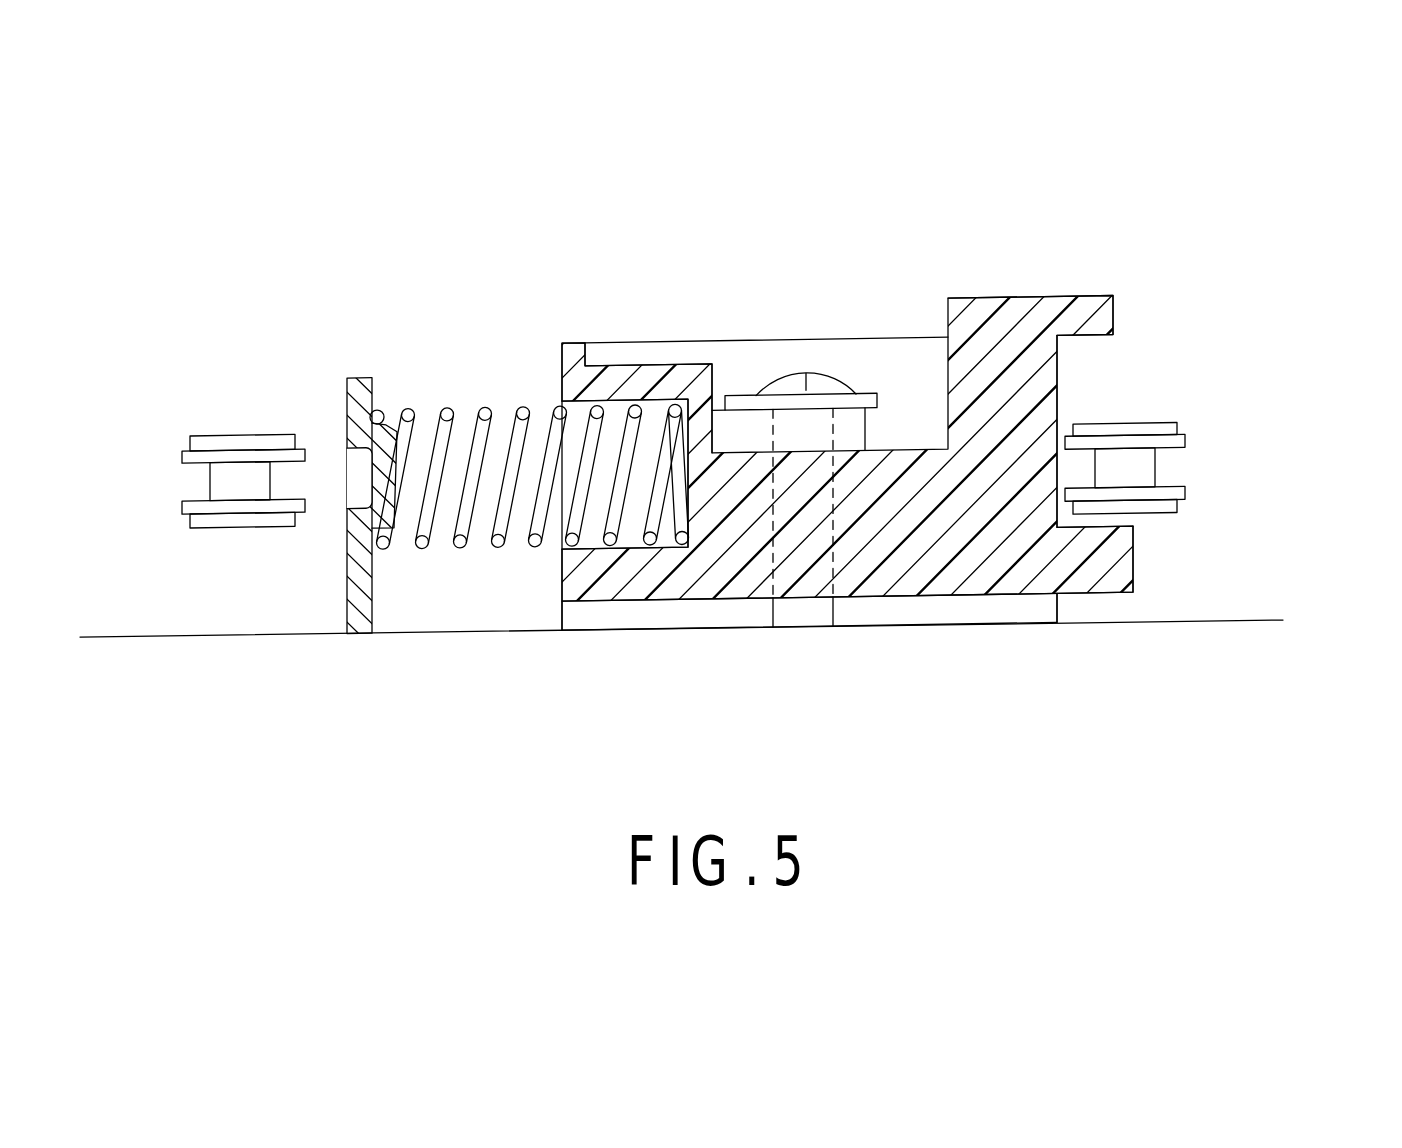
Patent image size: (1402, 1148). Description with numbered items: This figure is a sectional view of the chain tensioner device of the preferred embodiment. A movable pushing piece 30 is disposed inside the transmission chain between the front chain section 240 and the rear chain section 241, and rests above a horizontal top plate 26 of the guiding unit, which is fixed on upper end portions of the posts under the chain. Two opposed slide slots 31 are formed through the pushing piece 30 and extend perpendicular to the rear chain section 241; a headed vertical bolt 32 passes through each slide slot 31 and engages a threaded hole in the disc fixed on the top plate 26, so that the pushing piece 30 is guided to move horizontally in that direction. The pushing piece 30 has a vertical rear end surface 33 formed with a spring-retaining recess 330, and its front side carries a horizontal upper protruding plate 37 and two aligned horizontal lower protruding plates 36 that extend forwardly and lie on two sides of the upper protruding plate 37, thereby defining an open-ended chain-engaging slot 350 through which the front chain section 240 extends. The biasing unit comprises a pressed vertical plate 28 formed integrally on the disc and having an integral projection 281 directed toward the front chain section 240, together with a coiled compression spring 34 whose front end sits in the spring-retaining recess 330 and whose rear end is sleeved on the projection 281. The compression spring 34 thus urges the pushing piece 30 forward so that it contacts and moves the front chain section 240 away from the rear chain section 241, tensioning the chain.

The horizontal top plate 26 is at (1253, 623).
The pressed vertical plate 28 is at (347, 382).
The integral projection 281 is at (397, 427).
The pushing piece 30 is at (1054, 270).
The slide slot 31 is at (834, 430).
The headed vertical bolt 32 is at (783, 380).
The vertical rear end surface 33 is at (558, 373).
The spring-retaining recess 330 is at (618, 415).
The coiled compression spring 34 is at (496, 404).
The open-ended chain-engaging slot 350 is at (1057, 370).
The lower protruding plate 36 is at (1130, 563).
The upper protruding plate 37 is at (1105, 312).
The front chain section 240 is at (1165, 432).
The rear chain section 241 is at (217, 433).